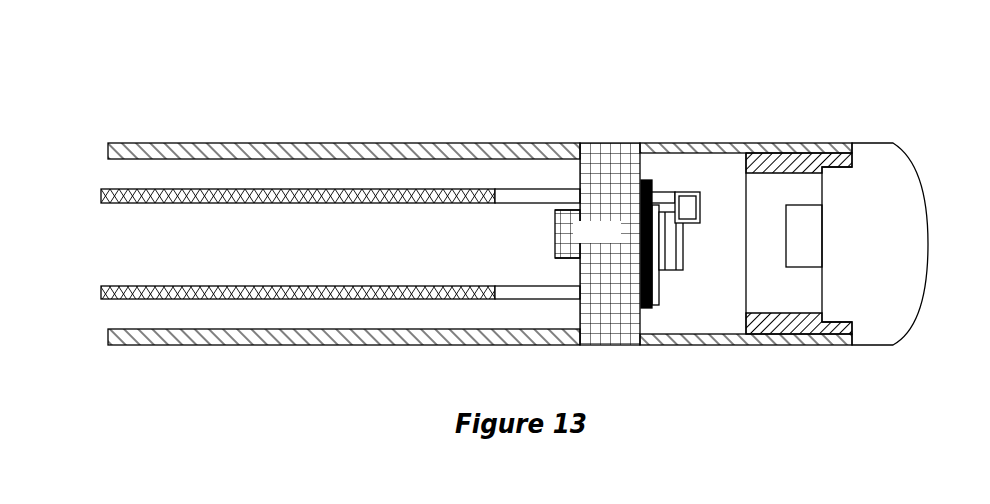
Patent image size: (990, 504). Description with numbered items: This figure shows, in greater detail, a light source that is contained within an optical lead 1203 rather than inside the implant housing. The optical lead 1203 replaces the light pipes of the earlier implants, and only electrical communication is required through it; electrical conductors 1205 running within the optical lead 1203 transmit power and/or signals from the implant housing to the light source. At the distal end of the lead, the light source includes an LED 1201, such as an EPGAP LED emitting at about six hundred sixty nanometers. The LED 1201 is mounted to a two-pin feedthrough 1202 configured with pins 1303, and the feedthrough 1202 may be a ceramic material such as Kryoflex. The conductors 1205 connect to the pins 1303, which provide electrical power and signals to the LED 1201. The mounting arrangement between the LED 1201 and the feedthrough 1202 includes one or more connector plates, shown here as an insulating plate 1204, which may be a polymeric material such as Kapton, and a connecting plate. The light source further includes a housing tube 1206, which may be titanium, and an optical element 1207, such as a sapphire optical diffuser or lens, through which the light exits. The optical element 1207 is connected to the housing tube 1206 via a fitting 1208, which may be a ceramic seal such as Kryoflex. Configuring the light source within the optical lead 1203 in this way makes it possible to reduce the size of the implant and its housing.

The LED 1201 is at (676, 242).
The two-pin feedthrough 1202 is at (697, 48).
The optical lead 1203 is at (258, 135).
The insulating plate 1204 is at (650, 308).
The electrical conductors 1205 is at (441, 287).
The housing tube 1206 is at (716, 143).
The optical element 1207 is at (857, 244).
The fitting 1208 is at (762, 325).
The pins 1303 is at (533, 190).